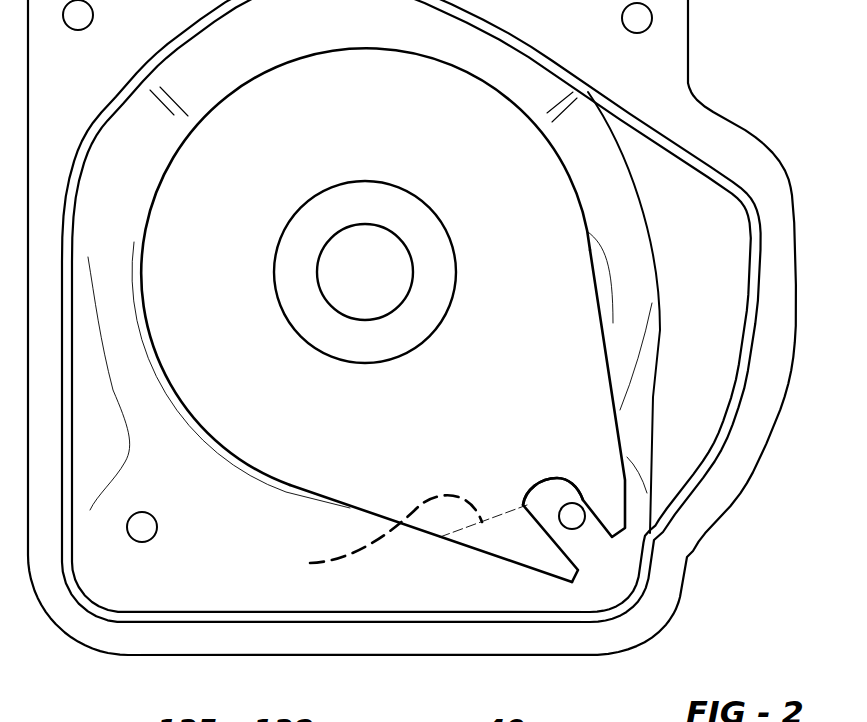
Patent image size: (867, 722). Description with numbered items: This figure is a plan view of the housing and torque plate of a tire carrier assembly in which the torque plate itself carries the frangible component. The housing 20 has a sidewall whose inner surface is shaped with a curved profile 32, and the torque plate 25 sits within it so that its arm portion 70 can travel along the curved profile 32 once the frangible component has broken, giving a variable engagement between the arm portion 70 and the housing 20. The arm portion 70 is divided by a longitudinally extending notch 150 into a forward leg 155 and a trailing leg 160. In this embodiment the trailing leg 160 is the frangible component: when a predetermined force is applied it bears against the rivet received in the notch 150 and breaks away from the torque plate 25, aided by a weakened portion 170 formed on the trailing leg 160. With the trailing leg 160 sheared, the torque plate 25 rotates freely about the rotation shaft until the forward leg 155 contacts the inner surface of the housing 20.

The housing 20 is at (690, 85).
The torque plate 25 is at (425, 133).
The curved profile 32 is at (747, 349).
The arm portion 70 is at (558, 478).
The longitudinally extending notch 150 is at (580, 545).
The forward leg 155 is at (607, 498).
The trailing leg 160 is at (530, 548).
The weakened portion 170 is at (396, 536).